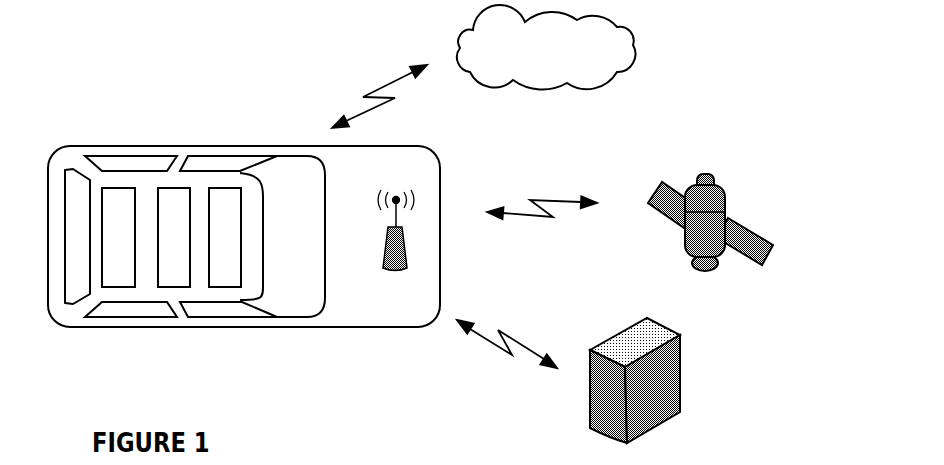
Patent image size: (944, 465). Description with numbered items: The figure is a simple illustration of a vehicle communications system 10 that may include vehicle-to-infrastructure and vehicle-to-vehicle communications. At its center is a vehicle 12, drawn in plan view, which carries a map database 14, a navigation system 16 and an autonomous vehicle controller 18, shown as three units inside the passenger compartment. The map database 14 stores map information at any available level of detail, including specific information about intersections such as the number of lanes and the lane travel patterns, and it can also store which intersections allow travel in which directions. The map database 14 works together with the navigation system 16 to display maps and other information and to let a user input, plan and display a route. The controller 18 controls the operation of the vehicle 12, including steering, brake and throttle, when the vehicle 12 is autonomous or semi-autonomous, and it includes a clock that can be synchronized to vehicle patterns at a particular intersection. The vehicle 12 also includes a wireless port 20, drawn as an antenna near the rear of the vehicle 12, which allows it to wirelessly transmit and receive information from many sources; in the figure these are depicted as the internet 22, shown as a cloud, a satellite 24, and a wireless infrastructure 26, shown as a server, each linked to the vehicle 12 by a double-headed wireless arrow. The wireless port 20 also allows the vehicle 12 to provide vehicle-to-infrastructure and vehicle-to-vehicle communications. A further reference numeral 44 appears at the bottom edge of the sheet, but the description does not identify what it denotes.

The communications system 10 is at (268, 46).
The vehicle 12 is at (373, 340).
The map database 14 is at (118, 188).
The navigation system 16 is at (175, 287).
The autonomous vehicle controller 18 is at (227, 188).
The wireless port 20 is at (383, 252).
The internet 22 is at (550, 87).
The satellite 24 is at (725, 208).
The wireless infrastructure 26 is at (660, 325).
The component (partially shown) 44 is at (343, 464).